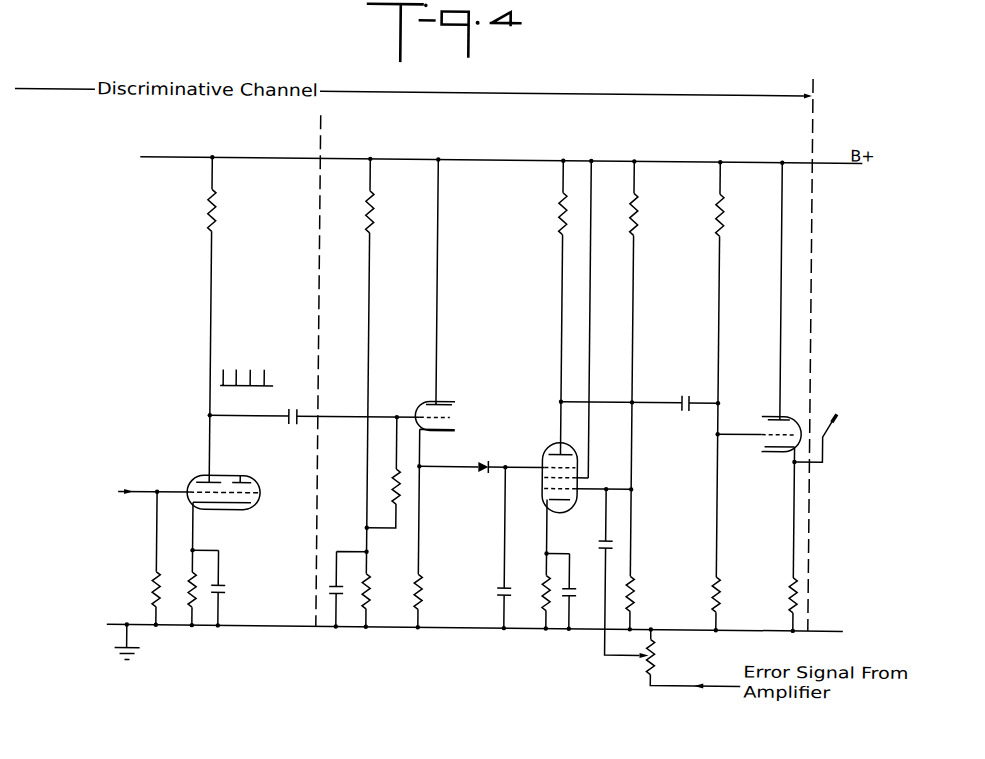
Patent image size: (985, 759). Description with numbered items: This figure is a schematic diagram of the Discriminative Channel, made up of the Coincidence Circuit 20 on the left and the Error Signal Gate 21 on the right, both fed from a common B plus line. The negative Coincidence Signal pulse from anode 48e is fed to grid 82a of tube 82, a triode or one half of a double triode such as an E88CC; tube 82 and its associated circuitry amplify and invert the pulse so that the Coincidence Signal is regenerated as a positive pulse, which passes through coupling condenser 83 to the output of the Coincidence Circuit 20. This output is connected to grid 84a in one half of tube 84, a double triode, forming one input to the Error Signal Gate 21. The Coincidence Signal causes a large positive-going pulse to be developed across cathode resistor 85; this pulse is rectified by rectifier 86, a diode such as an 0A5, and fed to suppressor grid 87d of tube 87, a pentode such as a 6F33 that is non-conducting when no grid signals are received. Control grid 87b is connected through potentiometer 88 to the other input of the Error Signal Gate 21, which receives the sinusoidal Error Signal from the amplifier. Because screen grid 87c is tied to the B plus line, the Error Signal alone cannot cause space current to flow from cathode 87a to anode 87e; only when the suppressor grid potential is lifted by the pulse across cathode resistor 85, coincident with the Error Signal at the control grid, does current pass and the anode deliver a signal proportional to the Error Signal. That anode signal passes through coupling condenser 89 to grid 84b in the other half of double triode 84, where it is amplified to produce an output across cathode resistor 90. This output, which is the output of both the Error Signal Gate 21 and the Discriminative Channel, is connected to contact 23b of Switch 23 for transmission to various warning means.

The Coincidence Circuit 20 is at (309, 136).
The Error Signal Gate 21 is at (796, 136).
The Switch 23 is at (879, 422).
The contact of Switch 23 23b is at (879, 422).
The anode 48e is at (94, 489).
The tube 82 is at (233, 480).
The grid of tube 82 82a is at (196, 490).
The coupling condenser 83 is at (292, 428).
The tube 84 is at (438, 402).
The grid 84a is at (451, 417).
The grid 84b is at (766, 431).
The cathode resistor 85 is at (423, 592).
The rectifier 86 is at (483, 461).
The tube 87 is at (574, 448).
The cathode of tube 87 87a is at (553, 503).
The control grid 87b is at (550, 500).
The screen grid 87c is at (547, 477).
The suppressor grid 87d is at (546, 466).
The anode of tube 87 87e is at (548, 453).
The potentiometer 88 is at (693, 658).
The coupling condenser 89 is at (695, 389).
The cathode resistor 90 is at (791, 591).